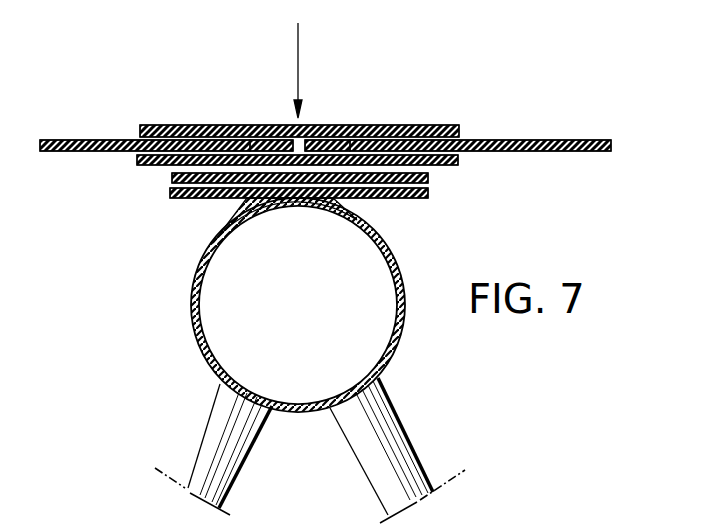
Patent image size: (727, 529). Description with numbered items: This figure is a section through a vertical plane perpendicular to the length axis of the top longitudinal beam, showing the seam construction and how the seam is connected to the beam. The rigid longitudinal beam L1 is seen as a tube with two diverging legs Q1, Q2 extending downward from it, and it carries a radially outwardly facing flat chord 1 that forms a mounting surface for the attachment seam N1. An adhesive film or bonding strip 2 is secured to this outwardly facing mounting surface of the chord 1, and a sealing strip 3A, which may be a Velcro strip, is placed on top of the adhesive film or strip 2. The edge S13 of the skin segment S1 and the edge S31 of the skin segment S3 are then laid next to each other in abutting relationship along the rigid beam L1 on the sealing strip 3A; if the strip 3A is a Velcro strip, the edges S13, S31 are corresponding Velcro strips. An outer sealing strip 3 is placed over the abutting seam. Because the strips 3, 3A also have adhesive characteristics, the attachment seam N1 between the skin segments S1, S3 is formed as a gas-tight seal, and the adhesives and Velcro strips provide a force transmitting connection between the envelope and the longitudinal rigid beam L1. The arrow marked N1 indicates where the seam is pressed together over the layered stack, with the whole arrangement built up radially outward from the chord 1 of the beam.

The flat chord 1 is at (175, 198).
The adhesive film or bonding strip 2 is at (428, 183).
The outer sealing strip 3 is at (450, 125).
The sealing strip 3A is at (458, 165).
The skin segment S1 is at (518, 140).
The skin segment S3 is at (77, 140).
The segment edge S31 is at (260, 141).
The segment edge S13 is at (341, 141).
The attachment seam N1 is at (317, 65).
The longitudinal beam L1 is at (166, 396).
The first leg portion Q1 is at (192, 458).
The second leg portion Q2 is at (420, 458).